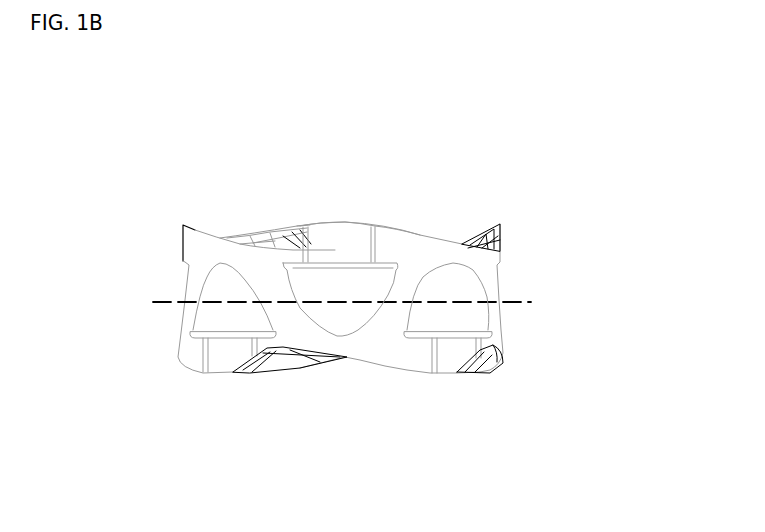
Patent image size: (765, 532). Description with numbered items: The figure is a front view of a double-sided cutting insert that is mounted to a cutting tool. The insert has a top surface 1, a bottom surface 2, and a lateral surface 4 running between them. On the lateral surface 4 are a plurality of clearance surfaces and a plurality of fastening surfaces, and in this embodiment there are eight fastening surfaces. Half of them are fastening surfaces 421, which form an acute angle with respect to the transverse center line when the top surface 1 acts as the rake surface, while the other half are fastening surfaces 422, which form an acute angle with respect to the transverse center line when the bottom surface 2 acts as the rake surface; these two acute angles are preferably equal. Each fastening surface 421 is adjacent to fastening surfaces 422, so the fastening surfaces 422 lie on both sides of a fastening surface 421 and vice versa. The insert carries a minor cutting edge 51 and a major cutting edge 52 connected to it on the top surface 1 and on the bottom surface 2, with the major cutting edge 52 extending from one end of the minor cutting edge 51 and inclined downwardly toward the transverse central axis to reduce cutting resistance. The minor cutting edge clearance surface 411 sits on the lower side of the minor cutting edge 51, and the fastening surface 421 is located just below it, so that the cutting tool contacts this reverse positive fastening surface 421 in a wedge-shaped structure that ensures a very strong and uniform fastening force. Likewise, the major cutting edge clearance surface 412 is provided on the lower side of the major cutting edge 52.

The top surface 1 is at (313, 216).
The bottom surface 2 is at (312, 377).
The lateral surface 4 is at (167, 319).
The minor cutting edge clearance surface 411 is at (333, 250).
The major cutting edge clearance surface 412 is at (437, 252).
The fastening surface 421 is at (345, 322).
The fastening surface 422 is at (463, 322).
The minor cutting edge 51 is at (360, 224).
The major cutting edge 52 is at (416, 234).